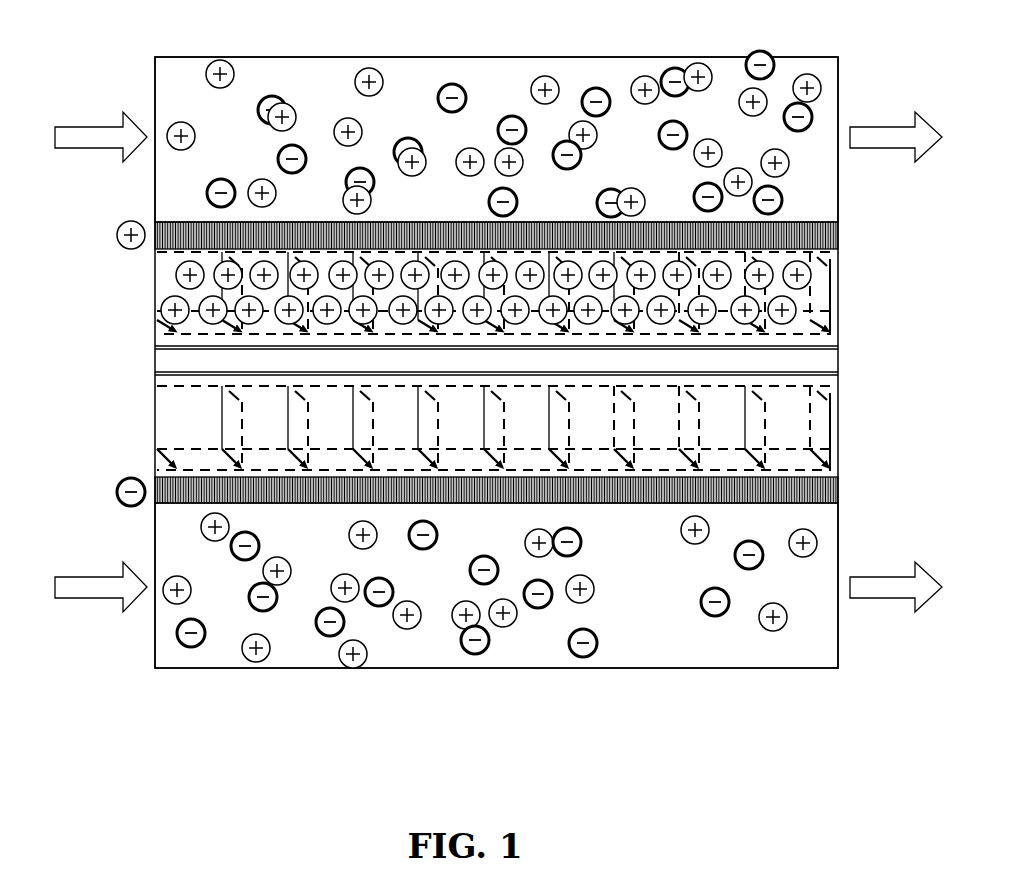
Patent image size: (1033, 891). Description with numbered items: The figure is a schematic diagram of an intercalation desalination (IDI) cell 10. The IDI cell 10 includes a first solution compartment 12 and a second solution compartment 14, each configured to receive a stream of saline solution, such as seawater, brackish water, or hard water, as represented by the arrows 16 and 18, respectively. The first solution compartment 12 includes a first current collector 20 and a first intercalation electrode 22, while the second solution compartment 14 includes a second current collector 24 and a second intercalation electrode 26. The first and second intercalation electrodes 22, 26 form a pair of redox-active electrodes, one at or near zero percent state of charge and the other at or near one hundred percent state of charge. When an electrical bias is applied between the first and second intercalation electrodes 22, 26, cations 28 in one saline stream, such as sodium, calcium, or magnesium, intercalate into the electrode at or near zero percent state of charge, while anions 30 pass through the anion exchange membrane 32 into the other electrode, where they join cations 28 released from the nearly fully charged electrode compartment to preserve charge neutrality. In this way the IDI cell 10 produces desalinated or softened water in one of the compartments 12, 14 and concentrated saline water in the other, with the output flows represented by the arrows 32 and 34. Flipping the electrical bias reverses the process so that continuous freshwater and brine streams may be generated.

The intercalation desalination (IDI) cell 10 is at (178, 694).
The first solution compartment 12 is at (153, 100).
The second solution compartment 14 is at (155, 622).
The arrow representing saline solution stream 16 is at (92, 126).
The arrow representing saline solution stream 18 is at (92, 576).
The first current collector 20 is at (838, 236).
The first intercalation electrode 22 is at (152, 282).
The second current collector 24 is at (838, 490).
The second intercalation electrode 26 is at (153, 438).
The cations 28 is at (218, 58).
The anions 30 is at (583, 657).
The anion exchange membrane 32 is at (884, 127).
The arrow representing output flow 34 is at (884, 577).